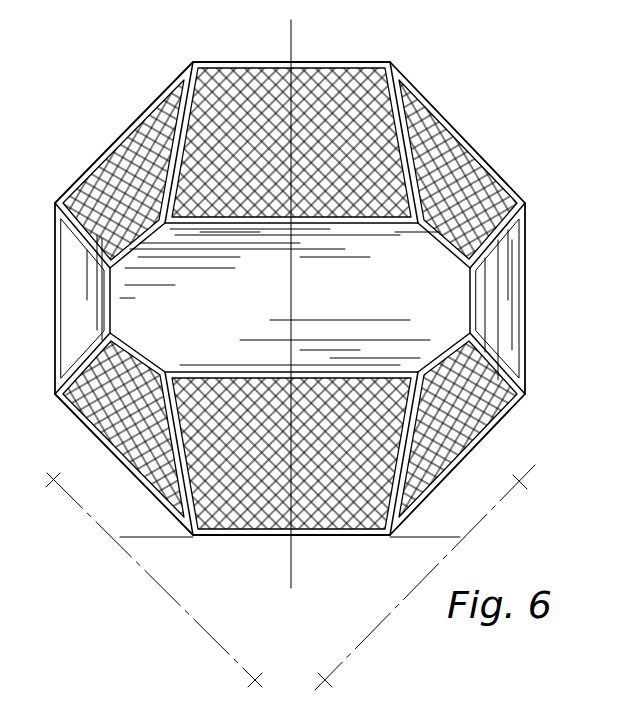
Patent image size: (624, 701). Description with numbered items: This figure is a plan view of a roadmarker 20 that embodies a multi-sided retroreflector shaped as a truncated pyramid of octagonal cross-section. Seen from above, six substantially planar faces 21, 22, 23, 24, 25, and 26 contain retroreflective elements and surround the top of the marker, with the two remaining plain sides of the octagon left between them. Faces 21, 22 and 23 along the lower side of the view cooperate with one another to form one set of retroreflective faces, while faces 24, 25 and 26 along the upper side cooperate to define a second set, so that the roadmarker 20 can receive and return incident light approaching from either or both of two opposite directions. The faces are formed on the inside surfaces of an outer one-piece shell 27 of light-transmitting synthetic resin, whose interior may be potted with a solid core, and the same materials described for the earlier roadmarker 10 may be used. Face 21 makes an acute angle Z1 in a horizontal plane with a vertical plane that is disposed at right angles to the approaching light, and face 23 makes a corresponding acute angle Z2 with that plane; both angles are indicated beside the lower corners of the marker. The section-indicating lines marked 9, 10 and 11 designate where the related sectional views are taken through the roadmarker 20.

The roadmarker 20 is at (530, 131).
The face 21 is at (92, 407).
The face 22 is at (202, 385).
The face 23 is at (497, 400).
The face 24 is at (138, 140).
The face 25 is at (343, 82).
The face 26 is at (422, 118).
The shell 27 is at (405, 293).
The section line 9- 9 is at (60, 483).
The roadmarker 10 is at (320, 675).
The section line 11- 11 is at (305, 31).
The acute angle Z1 is at (140, 493).
The acute angle Z2 is at (445, 493).